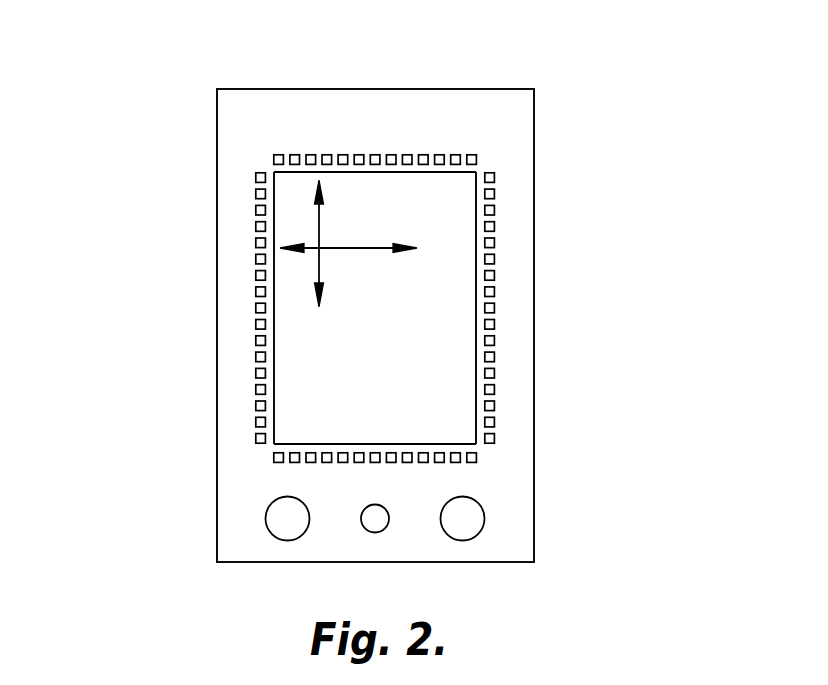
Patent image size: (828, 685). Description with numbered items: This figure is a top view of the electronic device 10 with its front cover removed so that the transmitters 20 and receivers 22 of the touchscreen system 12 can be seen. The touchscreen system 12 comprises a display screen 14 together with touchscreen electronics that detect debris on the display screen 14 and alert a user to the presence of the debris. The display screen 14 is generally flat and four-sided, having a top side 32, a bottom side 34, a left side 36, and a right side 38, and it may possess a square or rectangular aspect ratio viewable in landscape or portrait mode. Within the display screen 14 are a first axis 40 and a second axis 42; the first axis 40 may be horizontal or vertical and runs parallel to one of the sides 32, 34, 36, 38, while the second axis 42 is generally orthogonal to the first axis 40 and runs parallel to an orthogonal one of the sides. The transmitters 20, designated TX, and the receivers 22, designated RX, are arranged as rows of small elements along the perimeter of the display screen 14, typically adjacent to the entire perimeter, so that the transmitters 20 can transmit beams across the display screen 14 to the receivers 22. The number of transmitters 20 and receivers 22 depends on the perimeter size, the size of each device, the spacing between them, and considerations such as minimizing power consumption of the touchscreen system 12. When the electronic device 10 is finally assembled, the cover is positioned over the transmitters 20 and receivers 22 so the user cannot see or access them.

The electronic device 10 is at (156, 153).
The touchscreen system 12 is at (571, 163).
The display screen 14 is at (375, 308).
The transmitters 20 is at (369, 323).
The receivers 22 is at (374, 145).
The top side 32 is at (458, 172).
The bottom side 34 is at (333, 444).
The left side 36 is at (274, 342).
The right side 38 is at (476, 350).
The first axis 40 is at (320, 220).
The second axis 42 is at (338, 249).